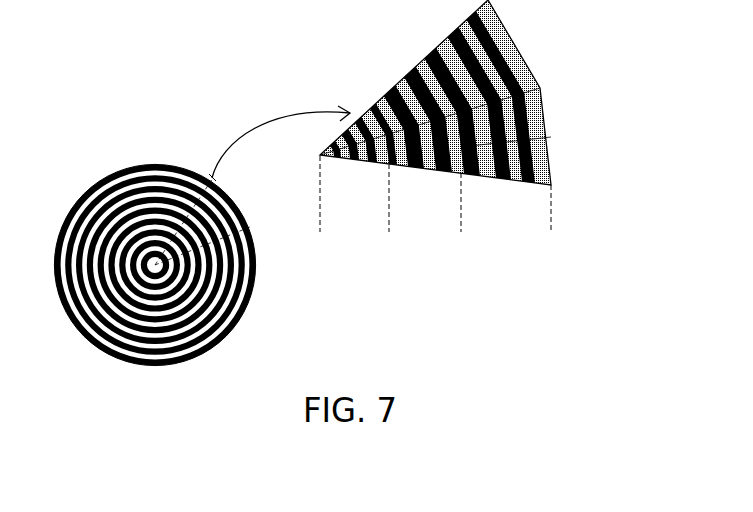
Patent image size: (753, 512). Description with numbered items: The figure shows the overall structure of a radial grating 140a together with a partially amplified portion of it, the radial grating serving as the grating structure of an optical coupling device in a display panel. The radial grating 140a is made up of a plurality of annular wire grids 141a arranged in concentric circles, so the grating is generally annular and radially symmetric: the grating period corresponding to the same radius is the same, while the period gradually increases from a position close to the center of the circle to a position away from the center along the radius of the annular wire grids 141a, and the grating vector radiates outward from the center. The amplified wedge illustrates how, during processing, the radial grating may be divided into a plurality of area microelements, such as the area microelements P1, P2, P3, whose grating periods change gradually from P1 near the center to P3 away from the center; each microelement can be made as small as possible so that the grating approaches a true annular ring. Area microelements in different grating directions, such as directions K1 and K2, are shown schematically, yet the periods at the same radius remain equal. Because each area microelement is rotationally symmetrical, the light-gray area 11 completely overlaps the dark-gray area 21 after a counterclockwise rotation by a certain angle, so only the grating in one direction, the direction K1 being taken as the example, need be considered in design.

The radial grating 140a is at (213, 264).
The annular wire grids 141a is at (216, 265).
The area 11 is at (438, 107).
The area 21 is at (438, 91).
The grating direction K1 is at (537, 137).
The grating direction K2 is at (510, 50).
The area microelement P1 is at (320, 191).
The area microelement P2 is at (461, 203).
The area microelement P3 is at (461, 216).